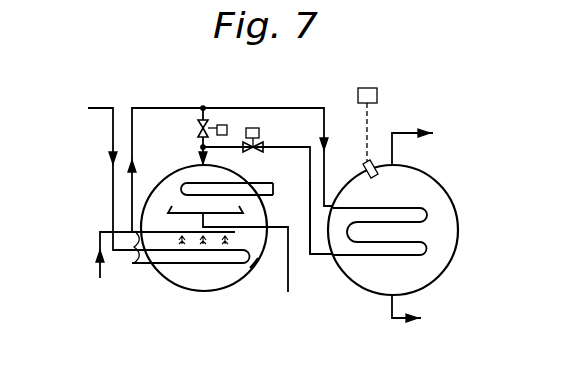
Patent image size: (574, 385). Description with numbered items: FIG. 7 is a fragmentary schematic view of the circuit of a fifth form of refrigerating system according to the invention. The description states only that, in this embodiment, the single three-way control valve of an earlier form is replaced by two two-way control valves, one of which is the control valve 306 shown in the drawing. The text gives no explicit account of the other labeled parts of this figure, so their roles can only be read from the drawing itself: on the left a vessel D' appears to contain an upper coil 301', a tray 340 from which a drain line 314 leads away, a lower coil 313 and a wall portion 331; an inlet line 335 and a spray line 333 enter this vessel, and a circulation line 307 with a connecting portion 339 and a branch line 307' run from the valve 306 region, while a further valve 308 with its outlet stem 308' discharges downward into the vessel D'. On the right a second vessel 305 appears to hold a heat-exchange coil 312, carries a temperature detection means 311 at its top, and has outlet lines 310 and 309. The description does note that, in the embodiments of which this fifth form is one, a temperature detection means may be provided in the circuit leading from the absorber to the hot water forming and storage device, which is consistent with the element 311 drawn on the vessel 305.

The absorber/evaporator vessel D' is at (204, 248).
The refrigerant coil 301' is at (229, 133).
The collecting tray 340 is at (173, 205).
The drain line 314 is at (288, 286).
The heating coil 313 is at (226, 265).
The vessel wall 331 is at (265, 239).
The inlet line 335 is at (93, 107).
The spray line 333 is at (100, 278).
The circulation line 307 is at (235, 152).
The connecting line 339 is at (310, 203).
The branch line 307' is at (268, 200).
The control valve 308 is at (182, 113).
The valve outlet line 308' is at (174, 142).
The two-way control valve 306 is at (259, 134).
The generator vessel 305 is at (442, 191).
The heat exchange coil 312 is at (428, 255).
The temperature sensor 311 is at (368, 88).
The outlet line 310 is at (402, 133).
The outlet line 309 is at (392, 318).